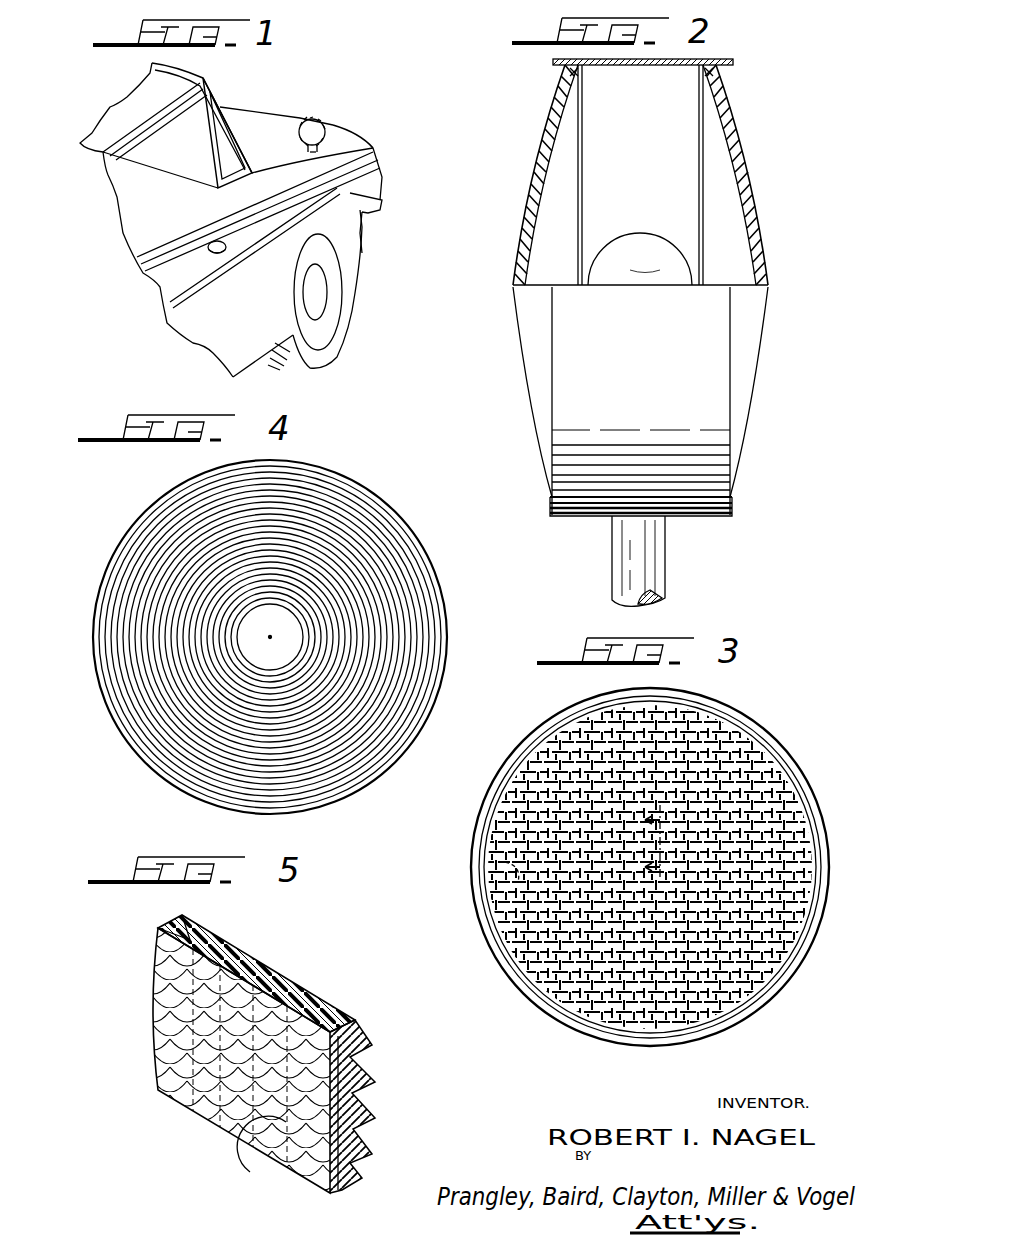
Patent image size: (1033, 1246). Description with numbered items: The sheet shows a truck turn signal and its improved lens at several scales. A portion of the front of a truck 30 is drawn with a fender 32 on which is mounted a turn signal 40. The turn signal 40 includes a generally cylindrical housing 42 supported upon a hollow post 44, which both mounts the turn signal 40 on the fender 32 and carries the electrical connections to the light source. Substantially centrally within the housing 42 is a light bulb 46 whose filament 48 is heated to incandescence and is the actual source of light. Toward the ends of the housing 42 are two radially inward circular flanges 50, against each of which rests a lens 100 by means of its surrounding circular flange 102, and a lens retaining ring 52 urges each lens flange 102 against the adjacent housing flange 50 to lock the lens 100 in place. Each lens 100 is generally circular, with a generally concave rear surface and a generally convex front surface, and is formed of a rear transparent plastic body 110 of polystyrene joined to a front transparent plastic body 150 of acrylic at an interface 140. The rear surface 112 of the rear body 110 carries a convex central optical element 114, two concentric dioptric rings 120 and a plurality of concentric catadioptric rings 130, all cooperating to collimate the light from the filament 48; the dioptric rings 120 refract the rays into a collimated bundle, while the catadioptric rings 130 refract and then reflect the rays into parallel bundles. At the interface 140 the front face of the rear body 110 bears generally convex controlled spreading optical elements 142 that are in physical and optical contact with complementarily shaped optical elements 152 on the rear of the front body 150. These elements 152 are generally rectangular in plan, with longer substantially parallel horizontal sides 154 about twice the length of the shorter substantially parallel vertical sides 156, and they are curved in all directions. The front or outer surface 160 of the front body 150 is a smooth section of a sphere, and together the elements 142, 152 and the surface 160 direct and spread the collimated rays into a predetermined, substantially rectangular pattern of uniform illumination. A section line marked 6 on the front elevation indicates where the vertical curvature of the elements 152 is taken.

In FIG. 1, the truck 30 is at (118, 263).
In FIG. 1, the fender 32 is at (350, 140).
In FIG. 1, the turn signal 40 is at (332, 103).
In FIG. 1, the housing 42 is at (326, 120).
In FIG. 2, the housing 42 is at (656, 382).
In FIG. 1, the hollow post 44 is at (314, 152).
In FIG. 2, the hollow post 44 is at (614, 560).
In FIG. 2, the light bulb 46 is at (638, 246).
In FIG. 2, the filament 48 is at (641, 290).
In FIG. 2, the circular flanges 50 is at (588, 72).
In FIG. 2, the lens retaining ring 52 is at (566, 70).
In FIG. 2, the lens 100 is at (768, 169).
In FIG. 4, the lens 100 is at (430, 527).
In FIG. 3, the lens 100 is at (513, 727).
In FIG. 5, the lens 100 is at (142, 942).
In FIG. 2, the circular flange 102 is at (556, 82).
In FIG. 4, the circular flange 102 is at (384, 518).
In FIG. 3, the circular flange 102 is at (578, 699).
In FIG. 5, the rear transparent plastic body 110 is at (297, 968).
In FIG. 4, the rear surface 112 is at (398, 614).
In FIG. 4, the convex central optical element 114 is at (250, 648).
In FIG. 4, the dioptric rings 120 is at (230, 647).
In FIG. 5, the dioptric rings 120 is at (373, 1140).
In FIG. 4, the catadioptric rings 130 is at (205, 602).
In FIG. 5, the catadioptric rings 130 is at (377, 1070).
In FIG. 5, the interface 140 is at (347, 1187).
In FIG. 5, the controlled spreading optical elements 142 is at (362, 1053).
In FIG. 5, the front transparent plastic body 150 is at (180, 927).
In FIG. 3, the optical elements 152 is at (484, 921).
In FIG. 5, the optical elements 152 is at (270, 1095).
In FIG. 3, the horizontal sides 154 is at (478, 866).
In FIG. 5, the horizontal sides 154 is at (300, 1045).
In FIG. 3, the vertical sides 156 is at (486, 876).
In FIG. 5, the vertical sides 156 is at (273, 1132).
In FIG. 5, the front or outer surface 160 is at (207, 983).
In FIG. 3, the section line 6 is at (661, 846).